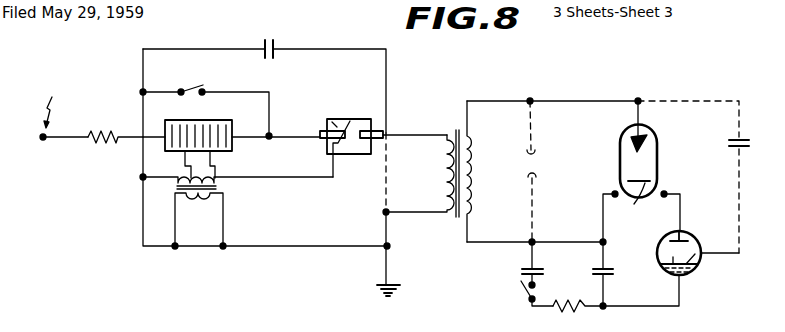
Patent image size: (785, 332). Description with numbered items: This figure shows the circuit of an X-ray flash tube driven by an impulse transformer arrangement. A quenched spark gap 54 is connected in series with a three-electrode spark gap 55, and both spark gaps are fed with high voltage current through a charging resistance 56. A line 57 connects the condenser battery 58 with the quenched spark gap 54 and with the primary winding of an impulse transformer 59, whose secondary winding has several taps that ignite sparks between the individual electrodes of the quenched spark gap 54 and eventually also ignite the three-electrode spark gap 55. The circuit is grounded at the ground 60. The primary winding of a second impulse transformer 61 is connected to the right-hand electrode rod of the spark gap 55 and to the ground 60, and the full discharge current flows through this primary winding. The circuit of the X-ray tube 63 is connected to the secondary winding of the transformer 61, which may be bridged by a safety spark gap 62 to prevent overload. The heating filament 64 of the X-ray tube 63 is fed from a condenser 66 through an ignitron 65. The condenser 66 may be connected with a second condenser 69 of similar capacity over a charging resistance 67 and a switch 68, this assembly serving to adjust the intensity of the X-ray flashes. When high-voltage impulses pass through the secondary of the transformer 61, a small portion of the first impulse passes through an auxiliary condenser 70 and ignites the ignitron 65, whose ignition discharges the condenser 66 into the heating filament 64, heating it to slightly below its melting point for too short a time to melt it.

The quenched spark gap 54 is at (201, 120).
The three-electrode spark gap 55 is at (347, 121).
The charging resistance 56 is at (102, 130).
The line 57 is at (143, 167).
The condenser battery 58 is at (275, 52).
The impulse transformer 59 is at (238, 200).
The ground 60 is at (392, 281).
The second impulse transformer 61 is at (448, 167).
The safety spark gap 62 is at (544, 166).
The X-ray tube 63 is at (657, 150).
The heating filament 64 is at (645, 204).
The ignitron 65 is at (665, 270).
The condenser 66 is at (607, 268).
The charging resistance 67 is at (578, 316).
The switch 68 is at (526, 296).
The second condenser 69 is at (539, 270).
The auxiliary condenser 70 is at (737, 150).